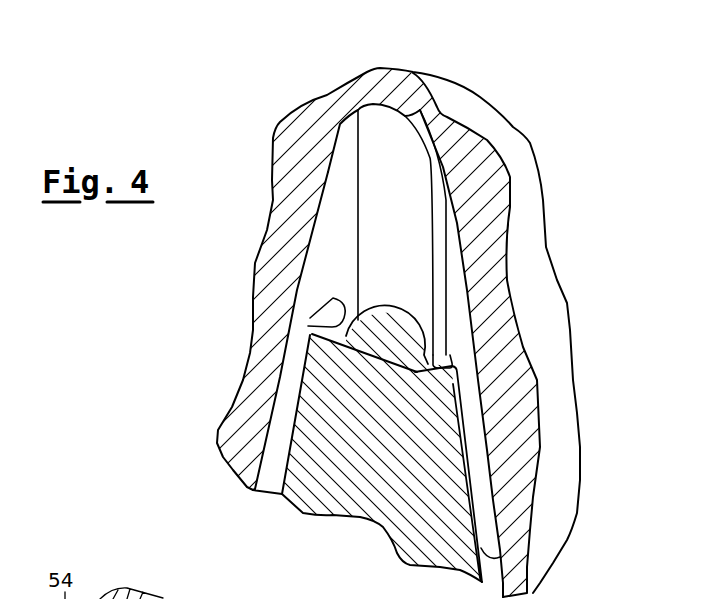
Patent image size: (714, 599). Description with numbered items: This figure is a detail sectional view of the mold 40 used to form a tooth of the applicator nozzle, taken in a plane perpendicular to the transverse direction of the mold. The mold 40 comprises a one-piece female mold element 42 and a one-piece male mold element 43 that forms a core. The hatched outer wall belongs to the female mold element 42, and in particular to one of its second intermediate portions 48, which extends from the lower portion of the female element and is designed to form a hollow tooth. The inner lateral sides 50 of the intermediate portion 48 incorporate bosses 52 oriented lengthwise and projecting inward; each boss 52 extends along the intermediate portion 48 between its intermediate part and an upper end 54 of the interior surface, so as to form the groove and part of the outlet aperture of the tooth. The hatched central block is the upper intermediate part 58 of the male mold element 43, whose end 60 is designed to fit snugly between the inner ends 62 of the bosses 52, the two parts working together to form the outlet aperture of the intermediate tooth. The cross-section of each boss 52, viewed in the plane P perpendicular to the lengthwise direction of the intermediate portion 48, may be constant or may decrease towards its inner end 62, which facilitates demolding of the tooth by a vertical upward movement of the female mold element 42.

The mold 40 is at (538, 116).
The female mold element 42 is at (516, 387).
The male mold element 43 is at (424, 518).
The intermediate portion 48 is at (336, 258).
The inner lateral sides 50 is at (350, 155).
The boss 52 is at (410, 123).
The upper end 54 is at (378, 113).
The upper intermediate part 58 is at (357, 477).
The end of upper part 60 is at (410, 327).
The inner end of boss 62 is at (420, 290).
The plane P is at (331, 306).